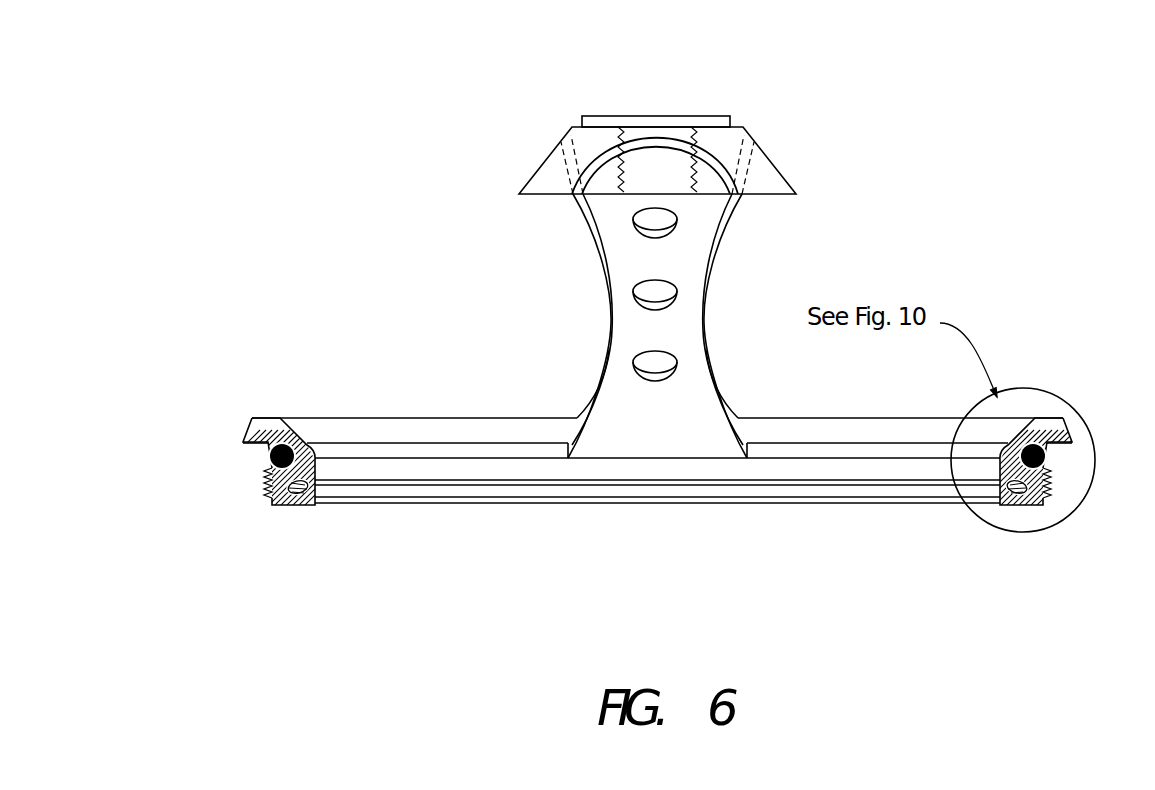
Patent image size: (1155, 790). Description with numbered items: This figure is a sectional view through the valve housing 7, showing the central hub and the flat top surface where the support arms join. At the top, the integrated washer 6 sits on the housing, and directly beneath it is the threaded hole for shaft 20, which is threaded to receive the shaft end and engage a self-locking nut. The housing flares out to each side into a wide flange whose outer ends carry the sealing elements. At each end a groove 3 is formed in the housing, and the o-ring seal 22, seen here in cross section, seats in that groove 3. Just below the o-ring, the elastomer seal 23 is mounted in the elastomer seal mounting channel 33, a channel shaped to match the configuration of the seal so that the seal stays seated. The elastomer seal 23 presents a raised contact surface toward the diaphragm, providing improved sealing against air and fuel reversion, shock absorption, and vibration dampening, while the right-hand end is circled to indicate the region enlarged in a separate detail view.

The integrated washer 6 is at (598, 115).
The threaded hole for shaft 20 is at (672, 127).
The valve housing 7 is at (455, 413).
The groove 3 is at (283, 447).
The o-ring seal 22 is at (263, 455).
The elastomer seal 23 is at (307, 500).
The elastomer seal mounting channel 33 is at (1030, 497).